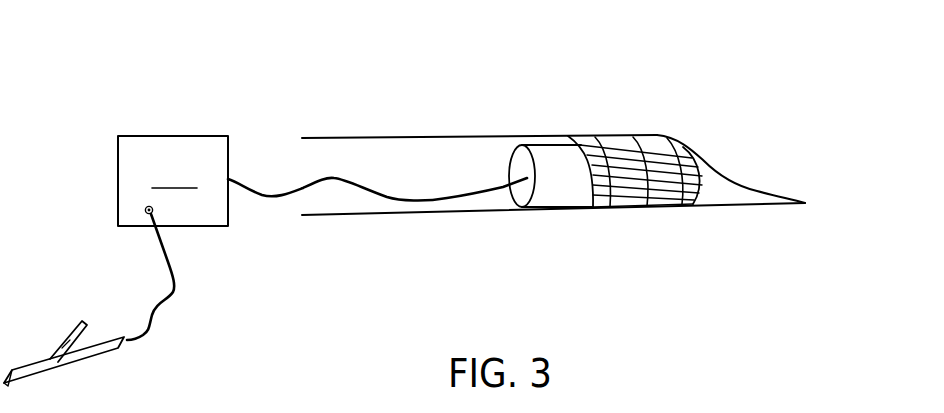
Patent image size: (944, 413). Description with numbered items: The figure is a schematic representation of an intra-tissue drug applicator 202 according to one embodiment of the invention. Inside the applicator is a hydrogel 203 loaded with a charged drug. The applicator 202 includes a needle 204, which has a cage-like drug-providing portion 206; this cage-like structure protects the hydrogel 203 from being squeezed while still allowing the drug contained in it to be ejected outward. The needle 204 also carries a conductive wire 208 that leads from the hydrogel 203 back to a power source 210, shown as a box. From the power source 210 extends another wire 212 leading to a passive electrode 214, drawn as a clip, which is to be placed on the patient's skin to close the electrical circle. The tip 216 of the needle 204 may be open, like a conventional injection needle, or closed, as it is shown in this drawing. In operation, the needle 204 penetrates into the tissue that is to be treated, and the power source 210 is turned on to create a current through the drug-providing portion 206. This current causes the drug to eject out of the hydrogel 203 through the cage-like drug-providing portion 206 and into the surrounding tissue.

The drug applicator 202 is at (216, 87).
The hydrogel 203 is at (558, 183).
The needle 204 is at (440, 137).
The cage-like drug-providing portion 206 is at (656, 103).
The conductive wire 208 is at (438, 200).
The power source 210 is at (173, 181).
The wire 212 is at (175, 293).
The passive electrode 214 is at (58, 375).
The tip 216 is at (762, 198).